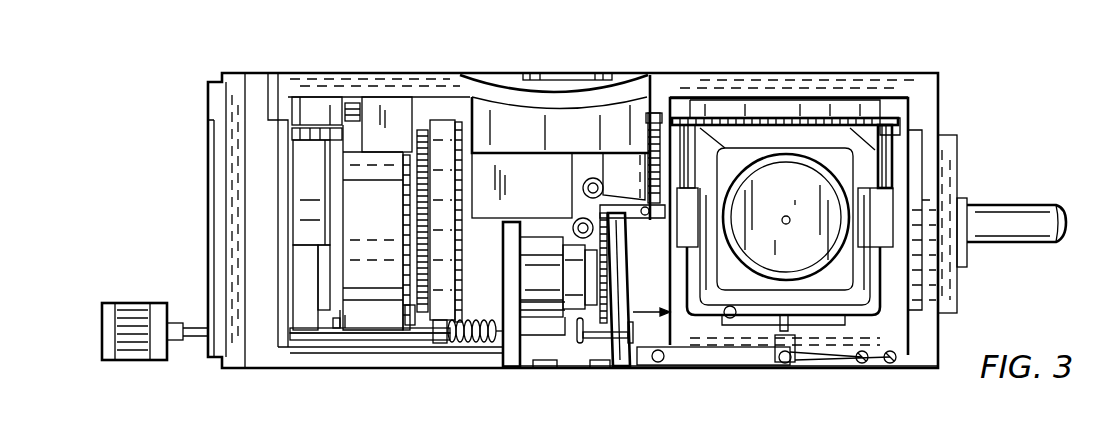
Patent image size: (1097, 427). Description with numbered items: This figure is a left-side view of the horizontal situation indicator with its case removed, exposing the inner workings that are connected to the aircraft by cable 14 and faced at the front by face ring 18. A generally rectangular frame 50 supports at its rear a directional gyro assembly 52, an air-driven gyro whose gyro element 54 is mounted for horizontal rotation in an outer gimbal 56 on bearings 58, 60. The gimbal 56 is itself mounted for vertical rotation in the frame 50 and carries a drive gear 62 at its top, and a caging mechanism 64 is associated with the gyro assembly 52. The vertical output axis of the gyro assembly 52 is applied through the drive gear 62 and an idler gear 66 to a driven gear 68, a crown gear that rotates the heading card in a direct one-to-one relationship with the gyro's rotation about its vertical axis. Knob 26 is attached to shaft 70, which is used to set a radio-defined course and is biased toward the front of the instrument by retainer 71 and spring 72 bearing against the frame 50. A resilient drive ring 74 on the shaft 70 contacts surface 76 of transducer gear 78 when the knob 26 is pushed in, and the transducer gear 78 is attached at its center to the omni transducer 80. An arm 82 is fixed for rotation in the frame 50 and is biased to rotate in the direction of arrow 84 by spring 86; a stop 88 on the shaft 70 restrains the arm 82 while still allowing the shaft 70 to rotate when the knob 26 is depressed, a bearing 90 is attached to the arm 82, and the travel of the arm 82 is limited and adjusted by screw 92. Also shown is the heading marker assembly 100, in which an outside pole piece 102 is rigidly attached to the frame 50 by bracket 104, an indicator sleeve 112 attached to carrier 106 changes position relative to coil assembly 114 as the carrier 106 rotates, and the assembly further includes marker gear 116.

The cable 14 is at (1025, 223).
The face ring 18 is at (237, 85).
The knob 26 is at (128, 322).
The frame 50 is at (734, 85).
The directional gyro assembly 52 is at (868, 150).
The gyro element 54 is at (809, 195).
The outer gimbal 56 is at (883, 290).
The bearing 58 is at (685, 222).
The bearing 60 is at (890, 217).
The drive gear 62 is at (817, 110).
The caging mechanism 64 is at (777, 373).
The idler gear 66 is at (458, 120).
The driven gear 68 is at (453, 218).
The shaft 70 is at (556, 84).
The retainer 71 is at (442, 335).
The spring 72 is at (477, 340).
The resilient drive ring 74 is at (580, 345).
The surface 76 is at (597, 323).
The transducer gear 78 is at (607, 270).
The omni transducer 80 is at (570, 288).
The arm 82 is at (620, 345).
The arrow 84 is at (651, 296).
The spring 86 is at (643, 180).
The stop 88 is at (632, 332).
The bearing 90 is at (576, 220).
The screw 92 is at (657, 115).
The heading marker assembly 100 is at (376, 222).
The outside pole piece 102 is at (358, 143).
The bracket 104 is at (388, 127).
The carrier 106 is at (330, 272).
The indicator sleeve 112 is at (303, 150).
The coil assembly 114 is at (315, 143).
The marker gear 116 is at (413, 315).